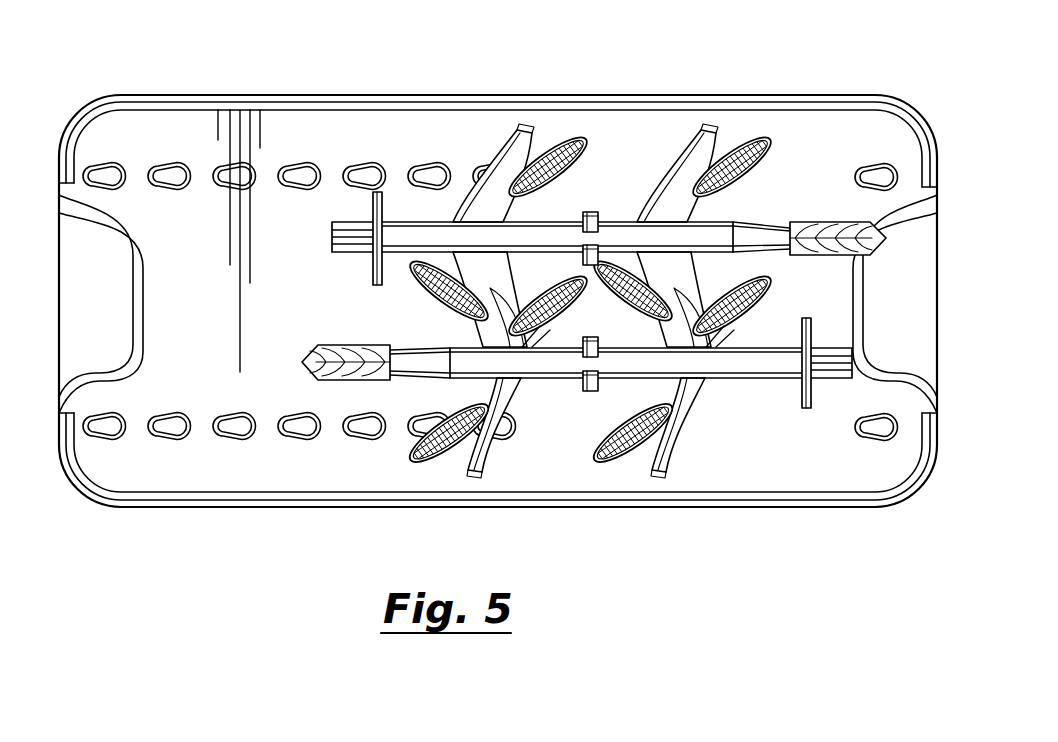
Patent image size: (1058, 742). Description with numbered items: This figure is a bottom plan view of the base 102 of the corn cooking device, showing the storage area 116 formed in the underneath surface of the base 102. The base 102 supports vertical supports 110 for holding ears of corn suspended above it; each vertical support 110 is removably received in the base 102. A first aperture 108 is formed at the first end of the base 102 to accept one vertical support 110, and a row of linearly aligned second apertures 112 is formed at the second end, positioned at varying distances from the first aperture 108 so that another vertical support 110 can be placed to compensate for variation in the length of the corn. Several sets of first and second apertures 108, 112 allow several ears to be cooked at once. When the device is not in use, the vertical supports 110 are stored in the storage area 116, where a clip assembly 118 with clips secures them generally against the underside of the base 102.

The base 102 is at (759, 97).
The first aperture 108 is at (886, 163).
The vertical support 110 is at (530, 237).
The second apertures 112 is at (429, 160).
The storage area 116 is at (798, 298).
The clip assembly 118 is at (594, 212).